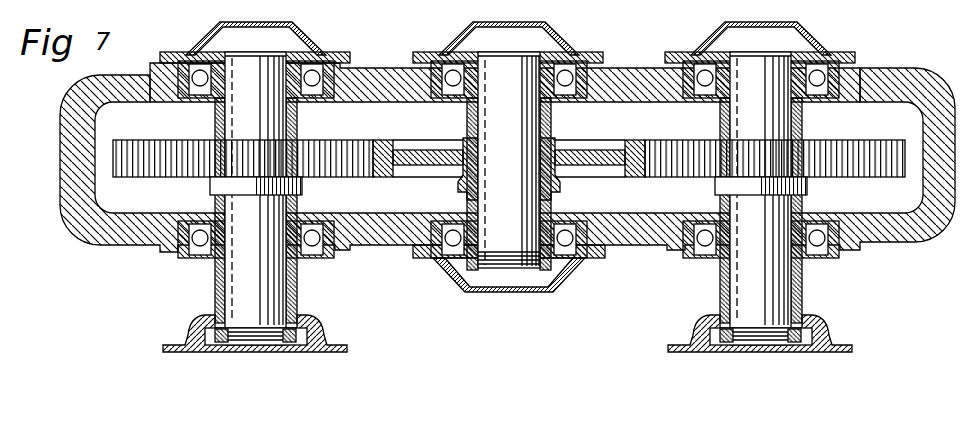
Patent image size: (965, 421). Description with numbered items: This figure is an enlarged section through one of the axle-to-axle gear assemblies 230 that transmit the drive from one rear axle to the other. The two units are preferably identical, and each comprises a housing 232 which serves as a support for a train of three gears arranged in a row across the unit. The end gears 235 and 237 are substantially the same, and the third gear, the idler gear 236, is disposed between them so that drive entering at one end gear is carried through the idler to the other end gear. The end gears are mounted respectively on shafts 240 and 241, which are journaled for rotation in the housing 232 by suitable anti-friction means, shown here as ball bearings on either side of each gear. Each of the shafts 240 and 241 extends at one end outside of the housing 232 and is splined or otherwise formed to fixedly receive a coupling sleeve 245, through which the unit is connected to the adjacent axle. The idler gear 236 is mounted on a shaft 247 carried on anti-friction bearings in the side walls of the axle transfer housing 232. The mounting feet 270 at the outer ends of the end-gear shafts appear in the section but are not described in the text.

The axle-to-axle gear assembly 230 is at (633, 62).
The housing 232 is at (378, 74).
The end gear 235 is at (825, 177).
The idler gear 236 is at (637, 168).
The end gear 237 is at (322, 177).
The shaft 240 is at (766, 113).
The shaft 241 is at (245, 204).
The coupling sleeve 245 is at (298, 283).
The shaft 247 is at (524, 113).
The mounting flange 270 is at (346, 345).